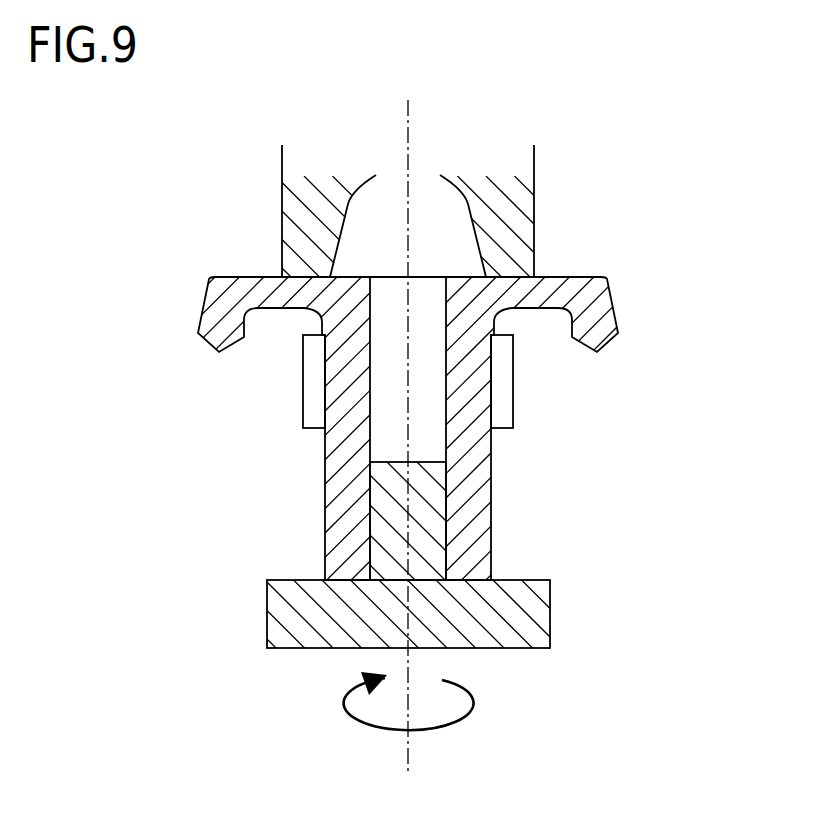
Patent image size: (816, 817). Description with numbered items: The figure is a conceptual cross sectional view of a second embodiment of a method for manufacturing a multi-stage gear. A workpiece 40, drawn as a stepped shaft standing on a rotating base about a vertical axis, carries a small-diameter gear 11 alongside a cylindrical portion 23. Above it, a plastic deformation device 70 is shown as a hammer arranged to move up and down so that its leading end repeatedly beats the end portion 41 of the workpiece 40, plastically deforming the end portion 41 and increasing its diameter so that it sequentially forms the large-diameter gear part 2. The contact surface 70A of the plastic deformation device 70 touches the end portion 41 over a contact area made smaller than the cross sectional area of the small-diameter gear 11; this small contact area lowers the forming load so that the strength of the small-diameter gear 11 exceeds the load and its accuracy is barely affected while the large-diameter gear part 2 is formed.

The large-diameter gear part 2 is at (429, 423).
The small-diameter gear 11 is at (303, 382).
The cylindrical portion 23 is at (481, 475).
The workpiece 40 is at (574, 262).
The end portion 41 is at (597, 310).
The plastic deformation device 70 is at (293, 210).
The contact surface 70A is at (275, 290).